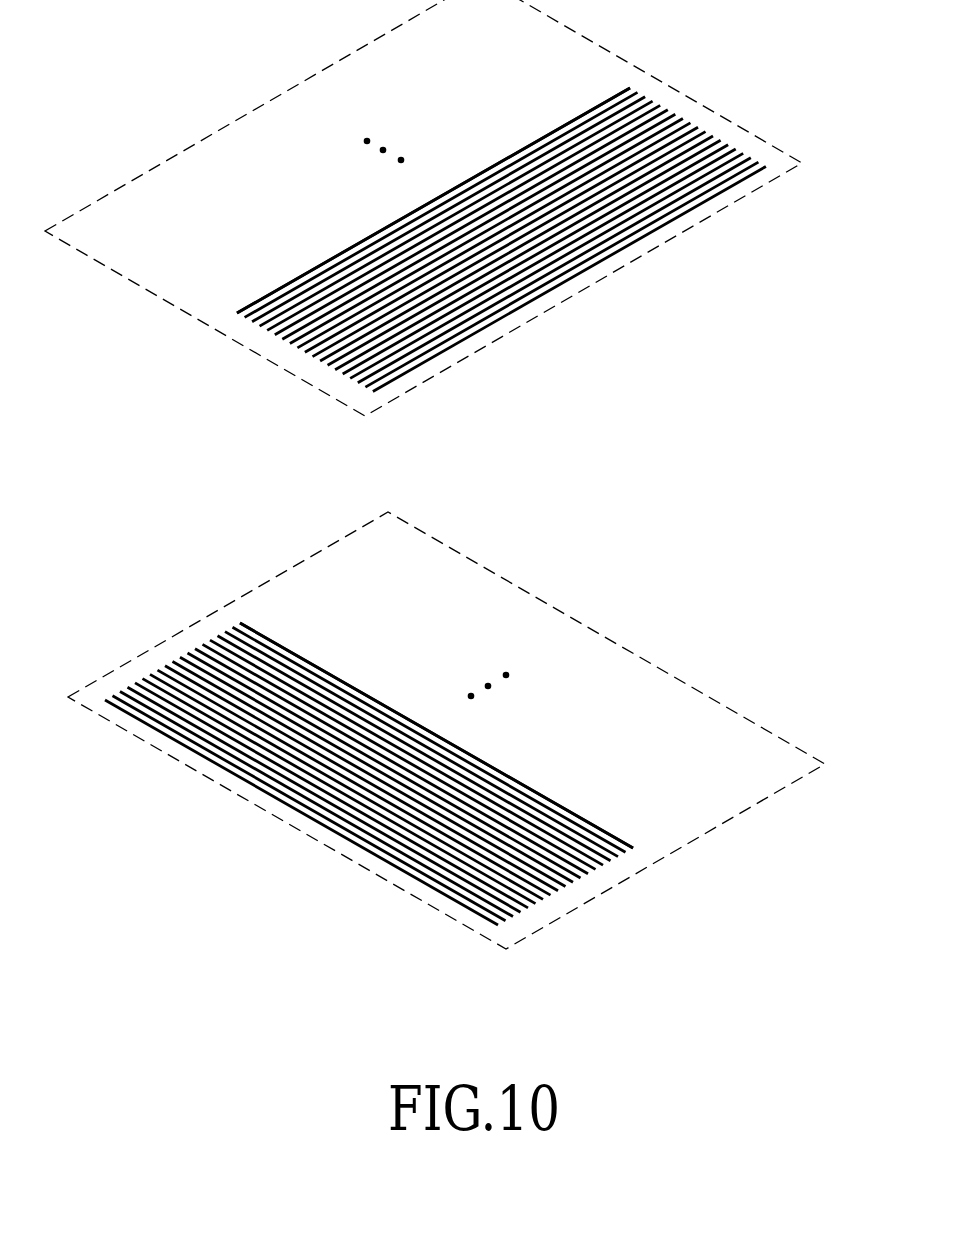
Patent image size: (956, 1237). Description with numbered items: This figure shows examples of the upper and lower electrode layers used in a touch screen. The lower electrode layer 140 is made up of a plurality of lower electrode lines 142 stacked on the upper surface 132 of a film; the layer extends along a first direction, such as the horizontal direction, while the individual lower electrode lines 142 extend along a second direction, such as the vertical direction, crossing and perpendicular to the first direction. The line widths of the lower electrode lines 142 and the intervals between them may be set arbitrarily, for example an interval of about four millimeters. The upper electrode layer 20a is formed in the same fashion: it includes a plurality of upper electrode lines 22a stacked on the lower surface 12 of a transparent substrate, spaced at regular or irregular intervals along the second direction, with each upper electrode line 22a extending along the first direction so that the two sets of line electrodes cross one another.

The lower surface 12 is at (618, 272).
The upper electrode layer 20a is at (525, 320).
The upper electrode line 22a is at (423, 367).
The upper surface 132 is at (677, 851).
The lower electrode layer 140 is at (567, 907).
The lower electrode line 142 is at (563, 808).